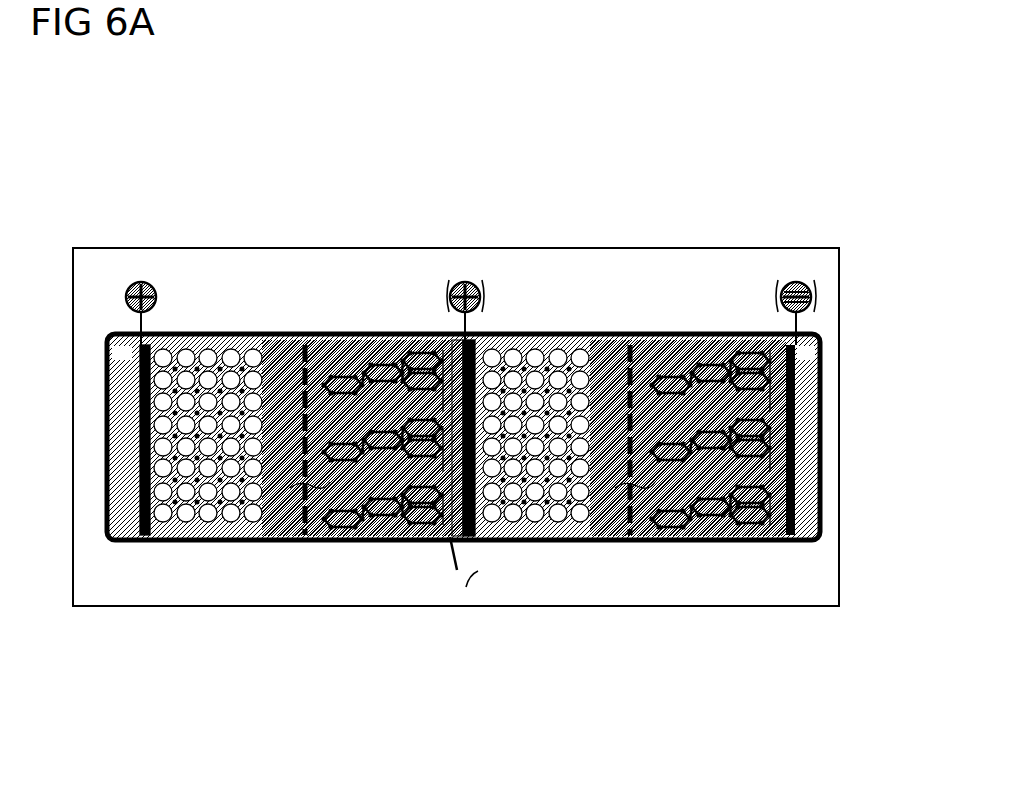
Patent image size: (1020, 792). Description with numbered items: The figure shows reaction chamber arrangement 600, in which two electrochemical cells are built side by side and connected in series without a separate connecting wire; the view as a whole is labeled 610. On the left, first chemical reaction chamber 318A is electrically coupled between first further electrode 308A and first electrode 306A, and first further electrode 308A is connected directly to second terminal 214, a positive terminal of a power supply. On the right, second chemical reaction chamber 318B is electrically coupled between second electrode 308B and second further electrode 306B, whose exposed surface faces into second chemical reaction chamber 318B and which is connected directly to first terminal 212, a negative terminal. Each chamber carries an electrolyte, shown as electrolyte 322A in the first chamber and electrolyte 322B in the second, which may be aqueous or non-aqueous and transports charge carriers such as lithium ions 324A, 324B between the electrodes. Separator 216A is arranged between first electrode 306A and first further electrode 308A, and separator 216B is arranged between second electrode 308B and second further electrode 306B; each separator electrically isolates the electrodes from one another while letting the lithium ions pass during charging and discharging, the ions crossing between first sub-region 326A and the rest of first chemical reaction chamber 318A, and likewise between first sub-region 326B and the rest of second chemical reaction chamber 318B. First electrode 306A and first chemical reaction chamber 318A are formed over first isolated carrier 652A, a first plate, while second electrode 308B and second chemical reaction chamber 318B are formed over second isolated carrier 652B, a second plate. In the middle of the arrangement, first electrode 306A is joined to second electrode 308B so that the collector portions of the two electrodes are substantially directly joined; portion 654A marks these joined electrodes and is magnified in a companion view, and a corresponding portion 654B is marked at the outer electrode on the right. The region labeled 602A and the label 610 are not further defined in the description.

The battery system 610 is at (762, 36).
The reaction chamber arrangement 600 is at (841, 298).
The second terminal 214 is at (141, 282).
The first terminal 212 is at (795, 282).
The first further electrode 308A is at (144, 540).
The second electrode 308B is at (474, 282).
The first chemical reaction chamber 318A is at (227, 338).
The second chemical reaction chamber 318B is at (553, 338).
The first sub-region 326A is at (197, 337).
The first sub-region 326B is at (520, 337).
The separator 216A is at (304, 337).
The separator 216B is at (629, 337).
The lithium ions 324A is at (380, 337).
The lithium ions 324B is at (705, 337).
The electrolyte 322A is at (263, 540).
The electrolyte 322B is at (585, 540).
The first isolated carrier 652A is at (225, 540).
The second isolated carrier 652B is at (550, 540).
The anode region 602A is at (332, 540).
The first electrode 306A is at (457, 568).
The second further electrode 306B is at (795, 540).
The portion of joined electrodes 654A is at (483, 545).
The portion of joined electrodes 654B is at (778, 540).